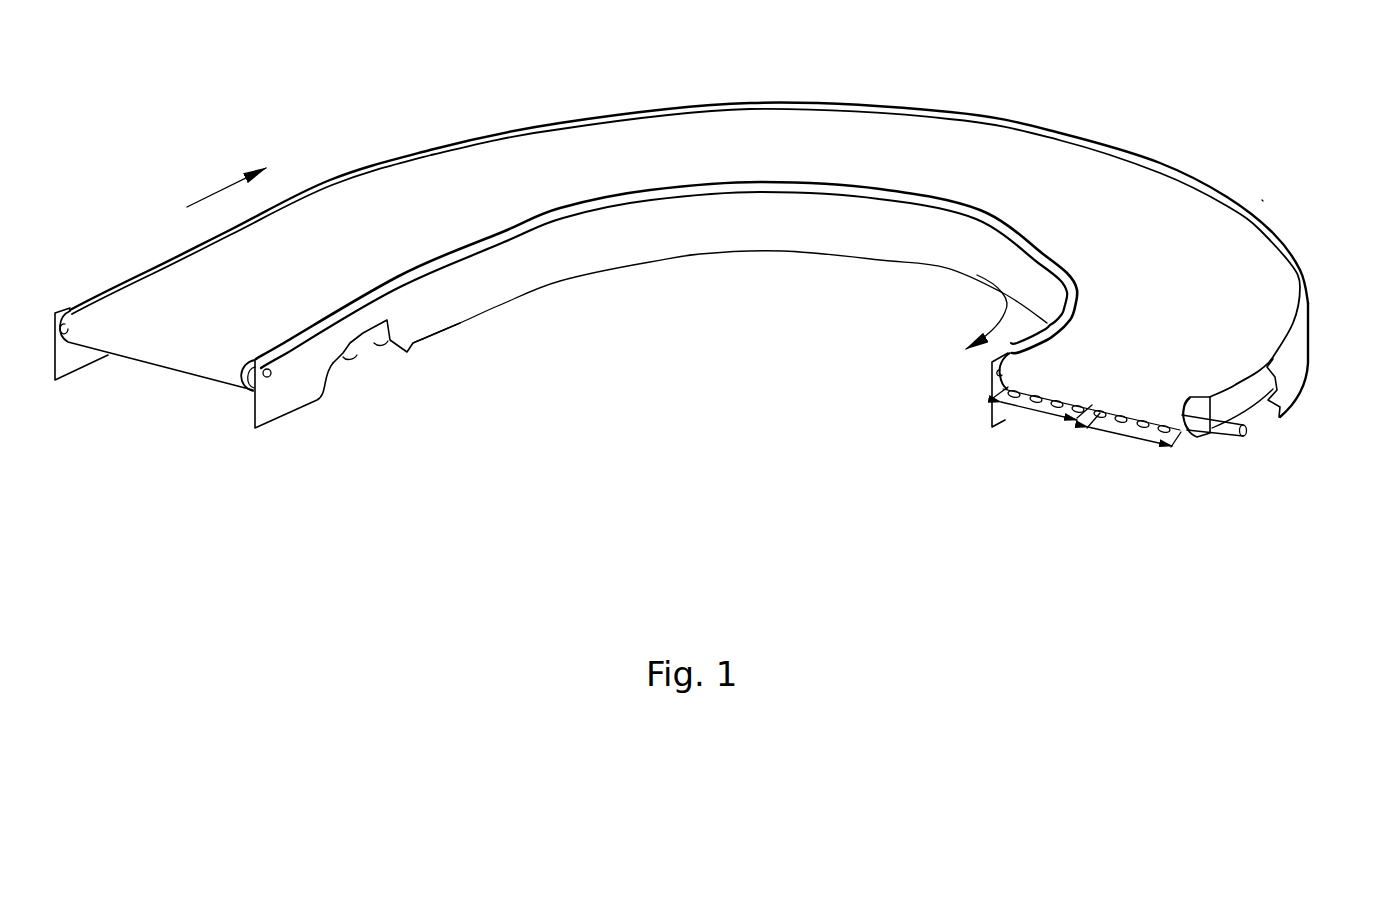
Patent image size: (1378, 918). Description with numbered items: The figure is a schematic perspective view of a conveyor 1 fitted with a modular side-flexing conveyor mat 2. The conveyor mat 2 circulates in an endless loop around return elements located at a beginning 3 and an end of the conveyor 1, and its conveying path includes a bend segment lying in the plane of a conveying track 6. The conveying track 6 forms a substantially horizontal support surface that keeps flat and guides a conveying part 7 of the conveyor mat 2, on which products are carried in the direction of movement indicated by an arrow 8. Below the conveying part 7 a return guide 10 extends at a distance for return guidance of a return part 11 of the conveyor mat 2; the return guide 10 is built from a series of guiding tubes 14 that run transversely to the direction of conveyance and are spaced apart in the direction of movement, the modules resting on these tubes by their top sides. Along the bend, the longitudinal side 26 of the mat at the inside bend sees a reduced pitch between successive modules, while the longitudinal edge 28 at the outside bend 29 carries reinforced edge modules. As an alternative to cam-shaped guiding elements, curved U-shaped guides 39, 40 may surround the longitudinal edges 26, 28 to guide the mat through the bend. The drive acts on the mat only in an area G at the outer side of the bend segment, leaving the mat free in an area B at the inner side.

The conveyor 1 is at (527, 527).
The conveyor mat 2 is at (103, 306).
The beginning 3 is at (188, 391).
The conveying track 6 is at (1294, 264).
The conveying part 7 is at (1268, 233).
The arrow 8 is at (213, 193).
The return guide 10 is at (352, 374).
The return part 11 is at (1188, 436).
The guiding tubes 14 is at (384, 347).
The longitudinal side 26 is at (920, 203).
The longitudinal edge 28 is at (1105, 140).
The outside bend 29 is at (1218, 165).
The curved U-shaped guide 39 is at (986, 396).
The curved U-shaped guide 40 is at (1198, 437).
The area G is at (1042, 417).
The area B is at (1134, 442).